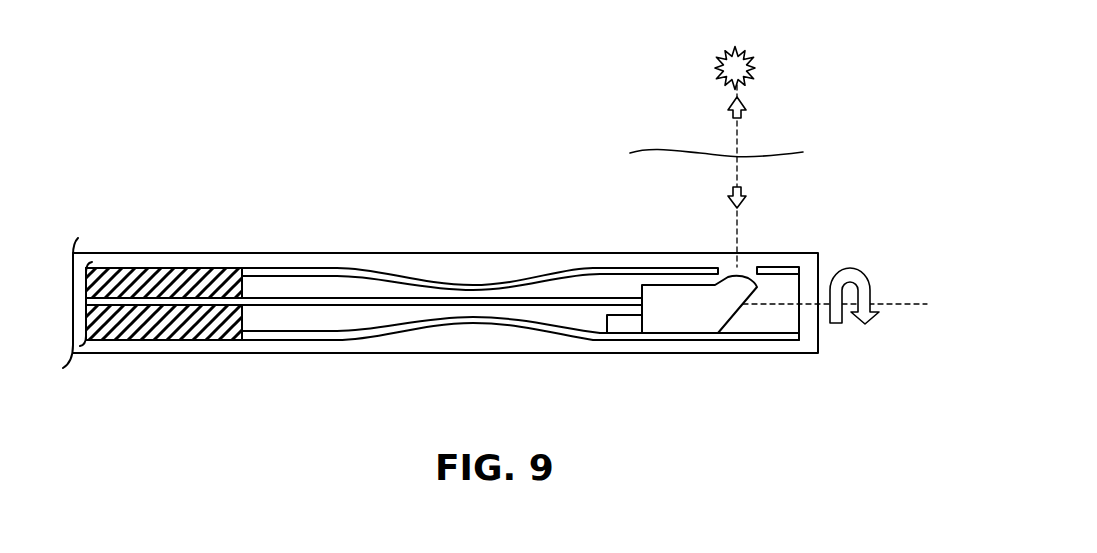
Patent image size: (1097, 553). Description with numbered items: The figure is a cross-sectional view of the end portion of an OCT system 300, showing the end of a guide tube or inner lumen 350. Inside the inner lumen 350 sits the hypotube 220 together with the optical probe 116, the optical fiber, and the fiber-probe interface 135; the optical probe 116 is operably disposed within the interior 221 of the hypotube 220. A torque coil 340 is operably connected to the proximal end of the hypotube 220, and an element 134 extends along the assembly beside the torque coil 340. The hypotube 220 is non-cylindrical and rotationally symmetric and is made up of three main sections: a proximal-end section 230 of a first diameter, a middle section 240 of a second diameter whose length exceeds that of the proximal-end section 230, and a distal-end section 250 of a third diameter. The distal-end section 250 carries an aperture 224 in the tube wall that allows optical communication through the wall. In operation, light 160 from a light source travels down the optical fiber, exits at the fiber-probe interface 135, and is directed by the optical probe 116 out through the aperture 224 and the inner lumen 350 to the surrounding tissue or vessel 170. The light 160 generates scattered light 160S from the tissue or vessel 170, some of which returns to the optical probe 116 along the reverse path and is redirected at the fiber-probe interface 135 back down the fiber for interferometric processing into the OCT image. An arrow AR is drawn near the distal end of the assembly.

The OCT system 300 is at (233, 108).
The torque coil 340 is at (160, 268).
The drive rod 134 is at (264, 298).
The inner lumen 350 is at (360, 252).
The hypotube 220 is at (530, 272).
The aperture 224 is at (748, 268).
The proximal-end section 230 is at (295, 342).
The middle section 240 is at (400, 337).
The interior 221 is at (563, 317).
The fiber-probe interface 135 is at (634, 306).
The optical probe 116 is at (680, 322).
The distal-end section 250 is at (760, 340).
The tissue or vessel 170 is at (700, 152).
The light 160 is at (742, 110).
The scattered light 160S is at (753, 62).
The rotation direction AR is at (850, 270).